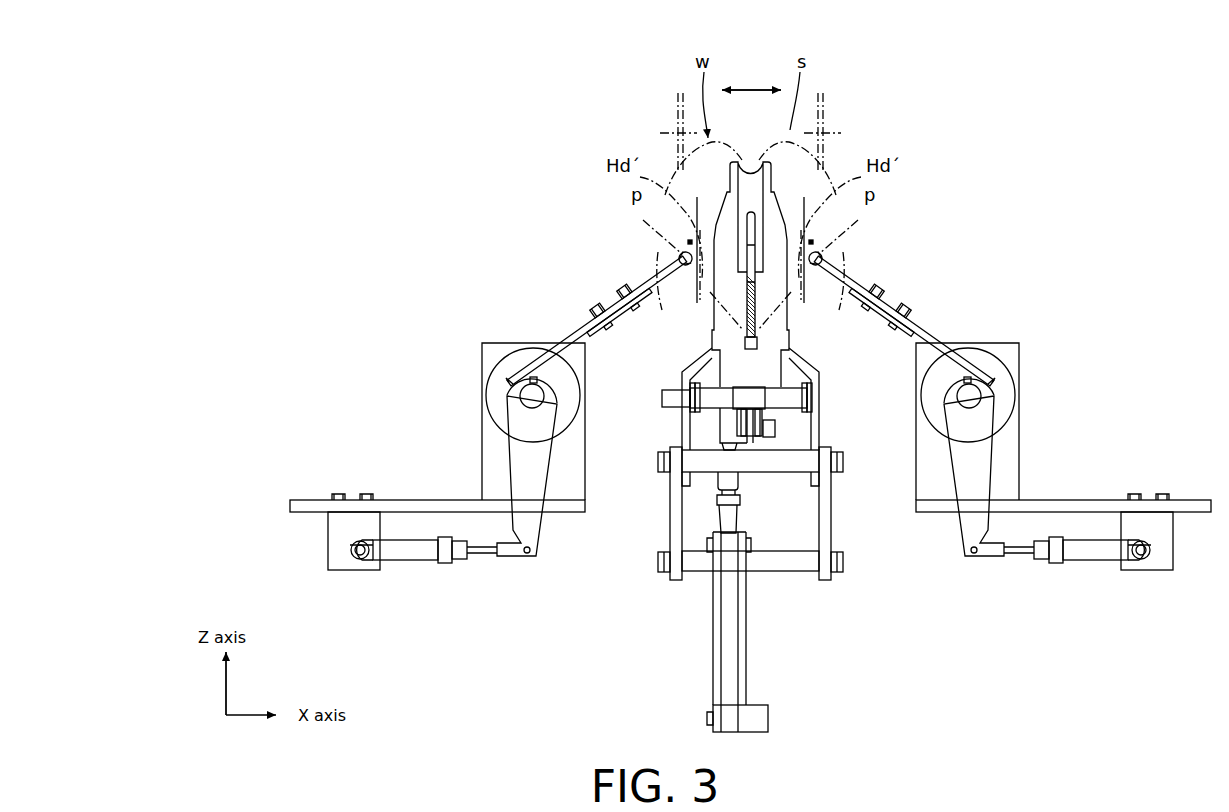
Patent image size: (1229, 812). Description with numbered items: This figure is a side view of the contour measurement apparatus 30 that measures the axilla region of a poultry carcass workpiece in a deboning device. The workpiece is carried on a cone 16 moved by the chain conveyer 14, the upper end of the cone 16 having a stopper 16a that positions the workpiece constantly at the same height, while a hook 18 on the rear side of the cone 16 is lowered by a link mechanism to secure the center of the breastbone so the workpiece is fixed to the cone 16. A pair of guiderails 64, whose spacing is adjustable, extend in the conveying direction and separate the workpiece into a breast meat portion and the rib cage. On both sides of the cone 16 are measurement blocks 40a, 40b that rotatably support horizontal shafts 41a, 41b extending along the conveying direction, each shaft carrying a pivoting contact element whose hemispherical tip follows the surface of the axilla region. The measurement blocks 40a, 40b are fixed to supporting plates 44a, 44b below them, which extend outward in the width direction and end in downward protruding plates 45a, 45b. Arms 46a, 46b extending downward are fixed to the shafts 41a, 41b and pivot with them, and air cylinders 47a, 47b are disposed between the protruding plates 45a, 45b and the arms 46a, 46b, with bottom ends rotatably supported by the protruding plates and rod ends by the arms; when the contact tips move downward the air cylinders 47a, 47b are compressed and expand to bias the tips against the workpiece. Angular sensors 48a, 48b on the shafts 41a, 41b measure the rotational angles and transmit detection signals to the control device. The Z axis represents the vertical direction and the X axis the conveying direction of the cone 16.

The chain conveyer 14 is at (768, 713).
The cone 16 is at (718, 197).
The stopper 16a is at (767, 172).
The hook 18 is at (756, 226).
The contour measurement apparatus 30 is at (952, 160).
The measurement block 40a is at (1020, 438).
The measurement block 40b is at (482, 438).
The shaft 41a is at (981, 396).
The shaft 41b is at (520, 396).
The supporting plate 44a is at (930, 513).
The supporting plate 44b is at (566, 513).
The protruding plate 45a is at (1151, 571).
The protruding plate 45b is at (350, 571).
The arm 46a is at (990, 465).
The arm 46b is at (510, 465).
The air cylinder 47a is at (1101, 564).
The air cylinder 47b is at (400, 564).
The angular sensor 48a is at (994, 380).
The angular sensor 48b is at (507, 380).
The guiderail 64 is at (823, 93).